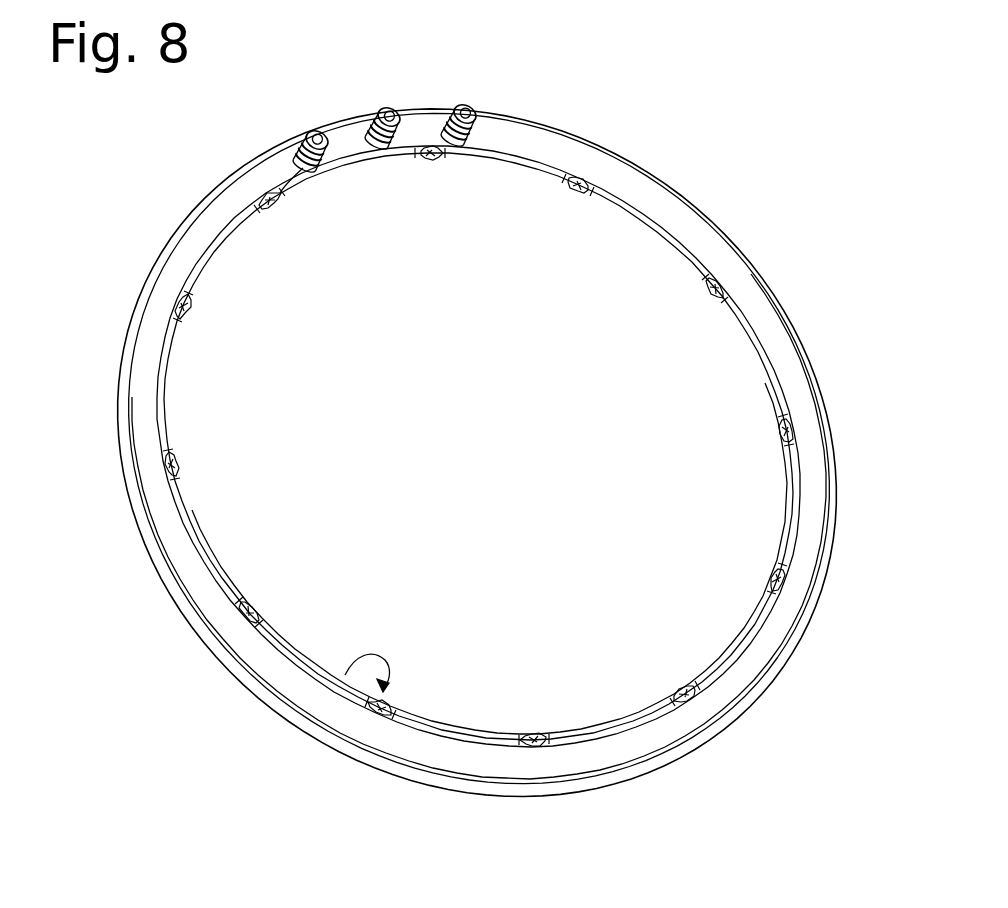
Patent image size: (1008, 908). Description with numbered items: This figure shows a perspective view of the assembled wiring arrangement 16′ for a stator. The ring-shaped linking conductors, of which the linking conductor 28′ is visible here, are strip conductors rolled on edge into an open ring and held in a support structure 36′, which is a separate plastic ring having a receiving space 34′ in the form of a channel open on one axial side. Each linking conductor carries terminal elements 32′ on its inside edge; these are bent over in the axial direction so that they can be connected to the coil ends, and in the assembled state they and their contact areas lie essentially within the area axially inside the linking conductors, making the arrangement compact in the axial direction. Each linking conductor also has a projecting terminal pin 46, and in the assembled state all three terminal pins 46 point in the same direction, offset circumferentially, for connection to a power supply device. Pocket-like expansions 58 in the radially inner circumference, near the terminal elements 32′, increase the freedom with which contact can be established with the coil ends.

The wiring arrangement 16′ is at (548, 812).
The linking conductor 28′ is at (596, 163).
The terminal elements 32′ is at (720, 282).
The receiving space 34′ is at (802, 410).
The support structure 36′ is at (784, 310).
The terminal pin 46 is at (304, 137).
The pocket-like expansions 58 is at (345, 675).